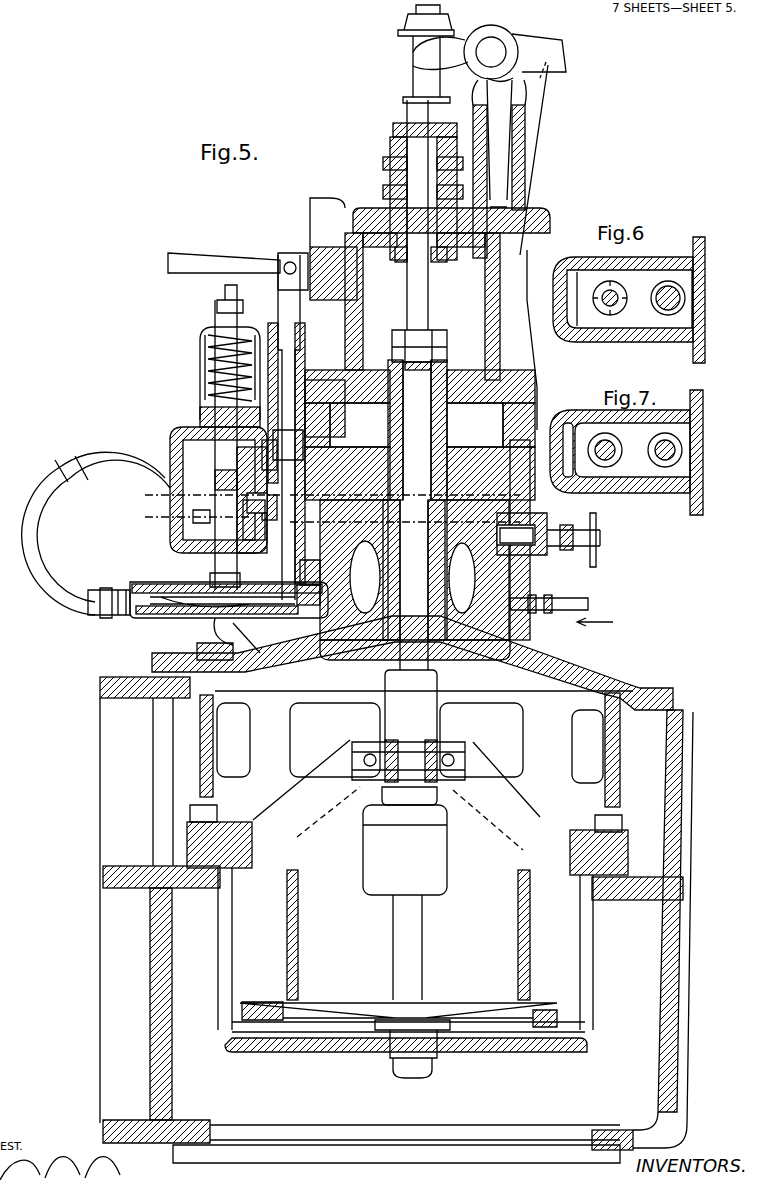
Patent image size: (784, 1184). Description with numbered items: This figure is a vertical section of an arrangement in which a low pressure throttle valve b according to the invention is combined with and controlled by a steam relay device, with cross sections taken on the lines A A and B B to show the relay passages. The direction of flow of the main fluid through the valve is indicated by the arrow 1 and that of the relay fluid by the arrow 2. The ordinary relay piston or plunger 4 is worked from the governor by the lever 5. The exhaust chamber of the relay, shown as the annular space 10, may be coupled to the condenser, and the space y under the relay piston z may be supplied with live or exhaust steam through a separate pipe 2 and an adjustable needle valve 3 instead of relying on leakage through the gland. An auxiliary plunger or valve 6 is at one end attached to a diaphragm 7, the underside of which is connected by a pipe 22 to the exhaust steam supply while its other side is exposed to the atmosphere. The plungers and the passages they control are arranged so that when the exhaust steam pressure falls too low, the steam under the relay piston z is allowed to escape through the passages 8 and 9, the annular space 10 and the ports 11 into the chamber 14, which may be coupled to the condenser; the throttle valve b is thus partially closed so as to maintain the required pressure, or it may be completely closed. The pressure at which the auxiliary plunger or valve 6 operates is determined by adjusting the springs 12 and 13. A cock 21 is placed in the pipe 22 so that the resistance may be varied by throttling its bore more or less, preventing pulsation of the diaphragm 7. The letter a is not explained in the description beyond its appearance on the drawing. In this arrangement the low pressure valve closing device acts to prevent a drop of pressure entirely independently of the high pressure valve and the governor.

In FIG. 5, the arrow indicating flow of main fluid 1 is at (112, 779).
In FIG. 5, the separate pipe 2 is at (578, 602).
In FIG. 5, the adjustable needle valve 3 is at (540, 520).
In FIG. 5, the relay piston or plunger 4 is at (298, 312).
In FIG. 5, the lever 5 is at (210, 268).
In FIG. 5, the auxiliary plunger or valve 6 is at (222, 440).
In FIG. 5, the diaphragm 7 is at (168, 590).
In FIG. 5, the passage 8 is at (420, 515).
In FIG. 5, the passage 9 is at (258, 515).
In FIG. 5, the annular space 10 is at (215, 482).
In FIG. 6, the annular space 10 is at (603, 296).
In FIG. 5, the ports 11 is at (250, 478).
In FIG. 6, the ports 11 is at (622, 296).
In FIG. 5, the spring 12 is at (206, 350).
In FIG. 5, the spring 13 is at (233, 385).
In FIG. 5, the chamber 14 is at (178, 472).
In FIG. 6, the chamber 14 is at (587, 315).
In FIG. 5, the cock 21 is at (75, 470).
In FIG. 5, the pipe 22 is at (60, 597).
In FIG. 5, the section line A A is at (324, 497).
In FIG. 5, the section line B B is at (324, 520).
In FIG. 5, the direction arrow a is at (595, 630).
In FIG. 5, the throttle valve b is at (300, 982).
In FIG. 5, the space under the relay piston y is at (515, 512).
In FIG. 5, the piston of the relay z is at (505, 486).